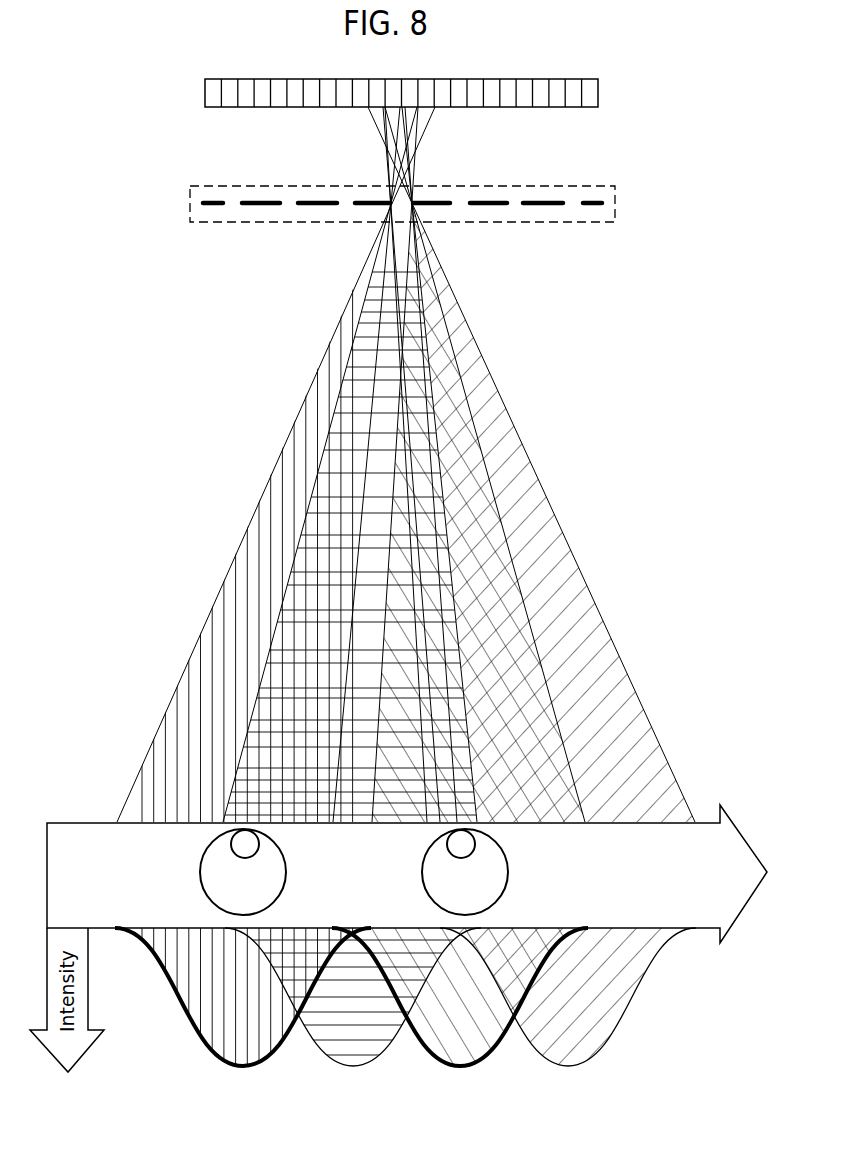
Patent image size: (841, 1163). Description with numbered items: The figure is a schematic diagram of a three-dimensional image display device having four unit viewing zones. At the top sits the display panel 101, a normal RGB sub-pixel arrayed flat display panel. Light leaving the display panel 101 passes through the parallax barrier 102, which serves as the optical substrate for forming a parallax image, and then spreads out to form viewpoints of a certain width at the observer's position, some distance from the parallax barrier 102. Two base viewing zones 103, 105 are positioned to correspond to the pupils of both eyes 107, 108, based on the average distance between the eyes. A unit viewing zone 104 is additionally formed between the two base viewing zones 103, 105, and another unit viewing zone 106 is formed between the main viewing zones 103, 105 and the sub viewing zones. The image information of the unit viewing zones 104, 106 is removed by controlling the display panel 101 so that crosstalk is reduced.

The display panel 101 is at (598, 91).
The parallax barrier 102 is at (615, 200).
The base viewing zone 103 is at (245, 1070).
The unit viewing zone 104 is at (353, 1070).
The base viewing zone 105 is at (460, 1070).
The unit viewing zone 106 is at (568, 1070).
The eye 107 is at (198, 870).
The eye 108 is at (508, 868).